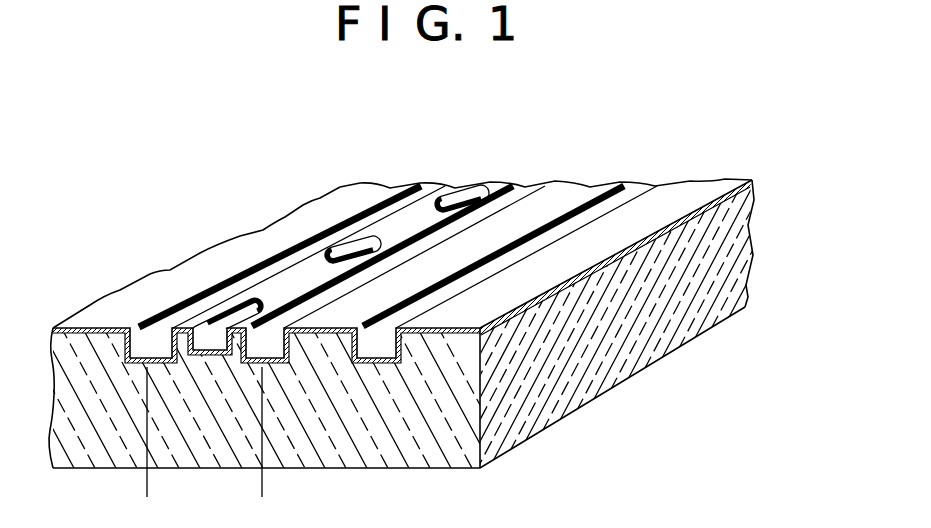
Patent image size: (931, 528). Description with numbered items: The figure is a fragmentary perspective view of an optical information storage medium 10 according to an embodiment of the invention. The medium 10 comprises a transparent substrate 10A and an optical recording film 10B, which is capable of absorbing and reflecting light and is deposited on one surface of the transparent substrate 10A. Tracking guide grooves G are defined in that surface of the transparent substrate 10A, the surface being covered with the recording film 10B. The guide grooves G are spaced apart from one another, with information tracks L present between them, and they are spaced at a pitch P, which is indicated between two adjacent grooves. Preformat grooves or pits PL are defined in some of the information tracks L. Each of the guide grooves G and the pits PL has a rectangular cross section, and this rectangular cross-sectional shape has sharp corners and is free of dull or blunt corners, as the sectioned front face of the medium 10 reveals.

The optical information storage medium 10 is at (734, 158).
The transparent substrate 10A is at (449, 440).
The optical recording film 10B is at (742, 198).
The tracking guide grooves G is at (428, 186).
The information tracks L is at (500, 180).
The preformat pits PL is at (222, 323).
The pitch P is at (262, 489).